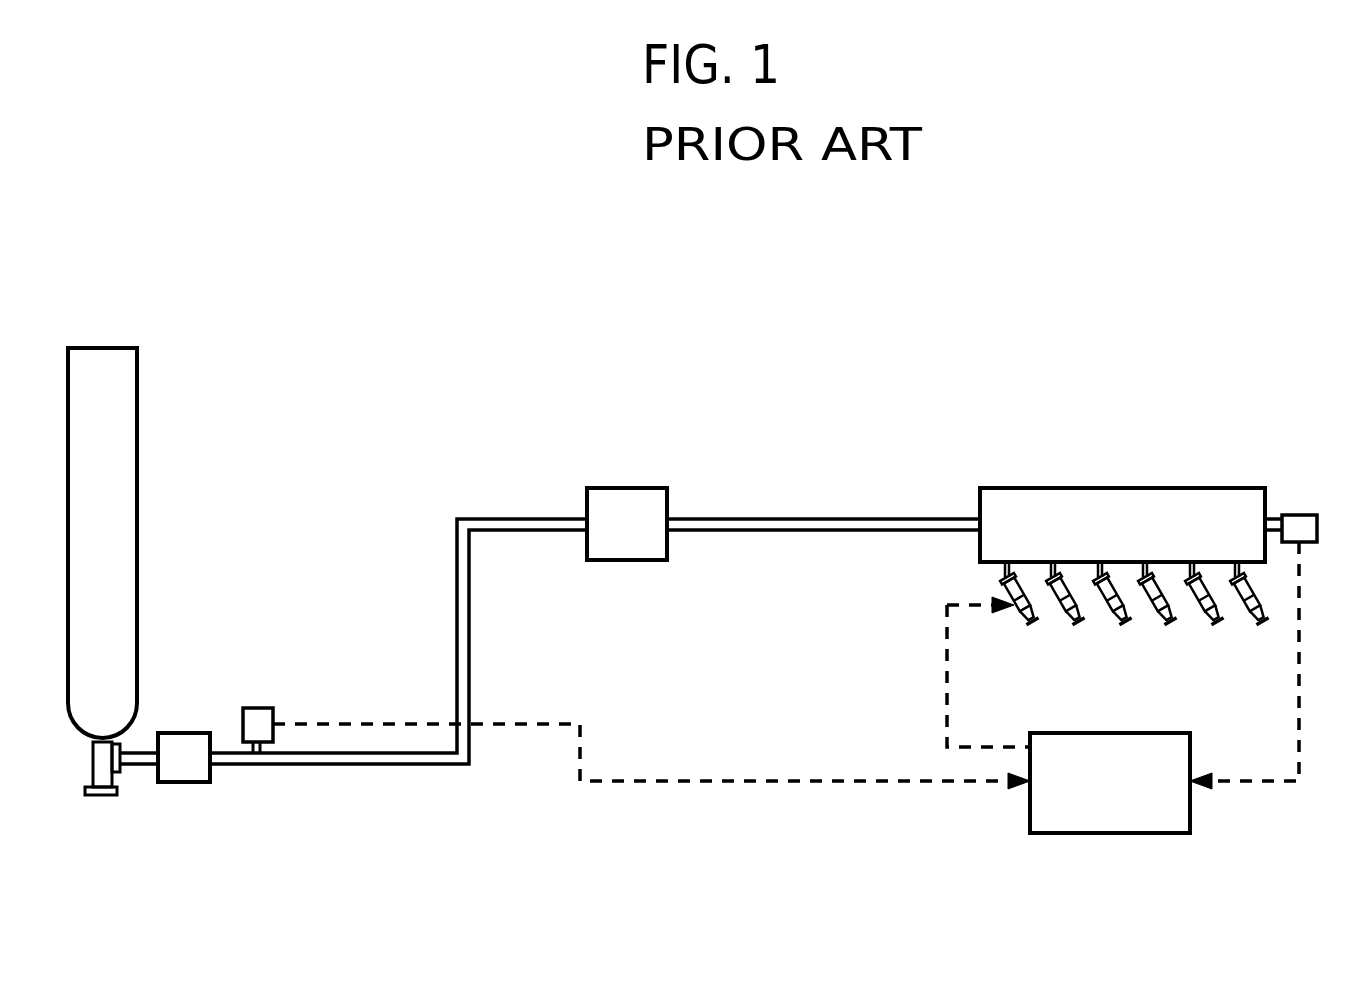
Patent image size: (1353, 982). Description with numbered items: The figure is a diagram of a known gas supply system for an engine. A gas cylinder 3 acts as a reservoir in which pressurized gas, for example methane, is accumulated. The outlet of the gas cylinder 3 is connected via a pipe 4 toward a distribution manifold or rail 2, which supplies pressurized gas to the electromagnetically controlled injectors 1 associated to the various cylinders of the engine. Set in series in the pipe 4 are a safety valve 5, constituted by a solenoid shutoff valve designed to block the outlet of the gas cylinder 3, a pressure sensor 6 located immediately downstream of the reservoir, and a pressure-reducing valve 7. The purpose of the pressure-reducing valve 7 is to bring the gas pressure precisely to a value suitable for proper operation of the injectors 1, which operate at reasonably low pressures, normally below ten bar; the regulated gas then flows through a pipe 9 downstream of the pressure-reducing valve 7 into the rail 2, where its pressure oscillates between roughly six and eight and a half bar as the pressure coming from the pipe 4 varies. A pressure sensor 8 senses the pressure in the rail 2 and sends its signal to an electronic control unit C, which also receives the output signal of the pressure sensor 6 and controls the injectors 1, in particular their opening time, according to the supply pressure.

The electromagnetically controlled injectors 1 is at (1037, 628).
The distribution manifold or rail 2 is at (1098, 503).
The gas cylinder 3 is at (125, 492).
The pipe 4 is at (445, 577).
The safety valve 5 is at (188, 773).
The pressure sensor 6 is at (256, 712).
The pressure-reducing valve 7 is at (632, 497).
The pressure sensor 8 is at (1318, 521).
The pipe 9 is at (790, 517).
The electronic control unit C is at (1163, 825).